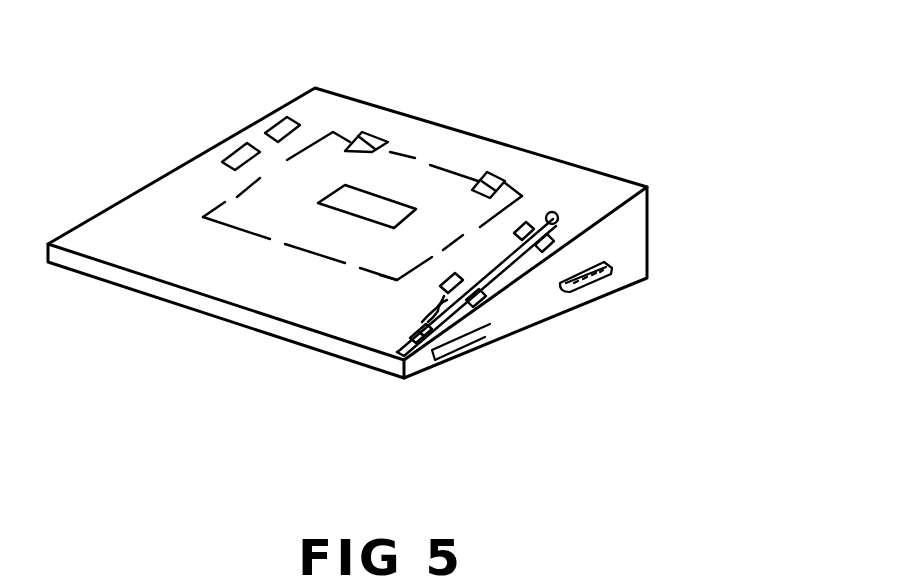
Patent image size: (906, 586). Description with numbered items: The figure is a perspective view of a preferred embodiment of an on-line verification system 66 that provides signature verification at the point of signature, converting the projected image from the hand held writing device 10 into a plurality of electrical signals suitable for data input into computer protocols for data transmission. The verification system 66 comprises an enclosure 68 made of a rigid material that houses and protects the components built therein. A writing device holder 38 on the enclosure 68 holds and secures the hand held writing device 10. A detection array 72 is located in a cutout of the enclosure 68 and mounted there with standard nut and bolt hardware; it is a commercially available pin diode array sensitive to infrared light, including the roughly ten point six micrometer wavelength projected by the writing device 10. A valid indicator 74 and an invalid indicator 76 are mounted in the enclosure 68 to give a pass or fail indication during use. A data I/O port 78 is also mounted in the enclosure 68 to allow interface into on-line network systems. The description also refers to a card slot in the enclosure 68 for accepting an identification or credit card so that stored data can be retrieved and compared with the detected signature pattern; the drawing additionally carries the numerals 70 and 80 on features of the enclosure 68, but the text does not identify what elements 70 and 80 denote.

The hand held writing device 10 is at (555, 212).
The writing device holder 38 is at (556, 212).
The verification system 66 is at (240, 337).
The enclosure 68 is at (512, 335).
The mounting tab 70 is at (360, 134).
The detection array 72 is at (400, 203).
The valid indicator 74 is at (276, 122).
The invalid indicator 76 is at (233, 151).
The data I/O port 78 is at (610, 268).
The slot 80 is at (465, 340).